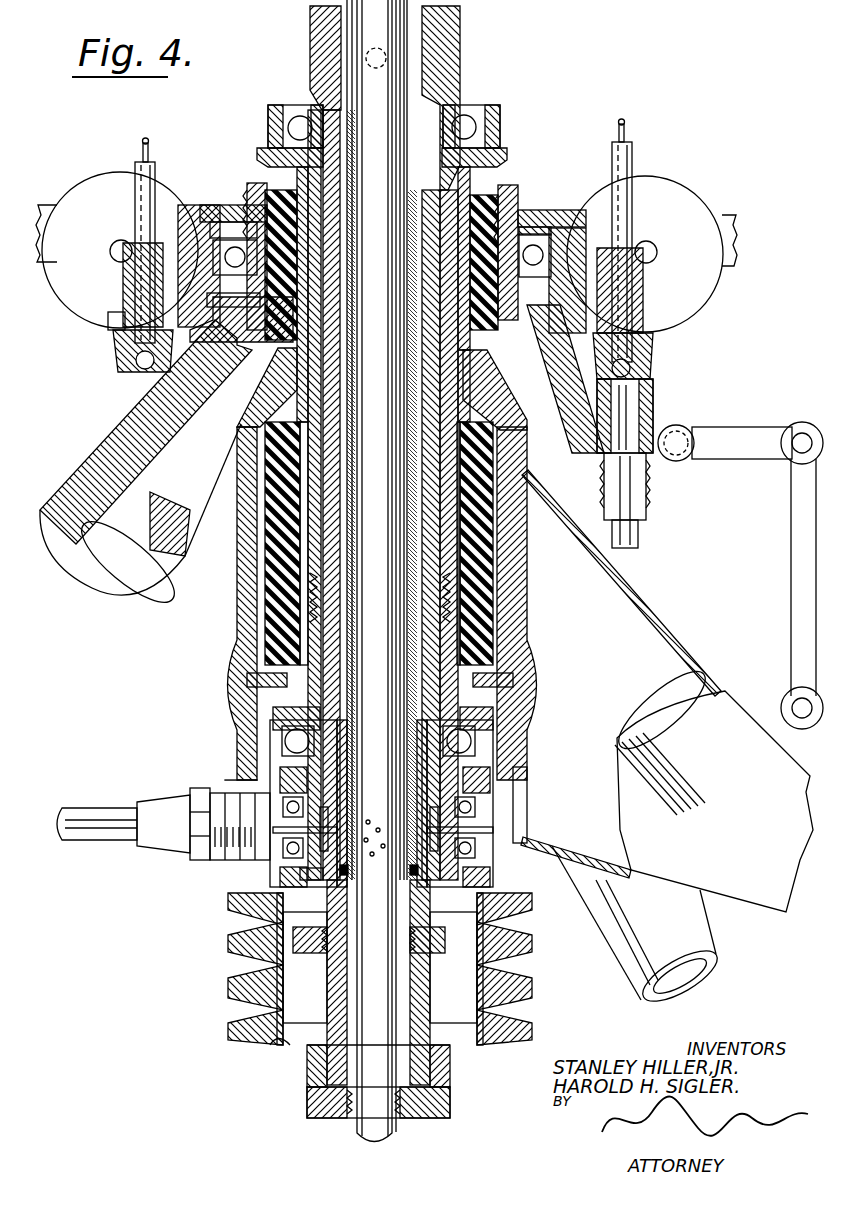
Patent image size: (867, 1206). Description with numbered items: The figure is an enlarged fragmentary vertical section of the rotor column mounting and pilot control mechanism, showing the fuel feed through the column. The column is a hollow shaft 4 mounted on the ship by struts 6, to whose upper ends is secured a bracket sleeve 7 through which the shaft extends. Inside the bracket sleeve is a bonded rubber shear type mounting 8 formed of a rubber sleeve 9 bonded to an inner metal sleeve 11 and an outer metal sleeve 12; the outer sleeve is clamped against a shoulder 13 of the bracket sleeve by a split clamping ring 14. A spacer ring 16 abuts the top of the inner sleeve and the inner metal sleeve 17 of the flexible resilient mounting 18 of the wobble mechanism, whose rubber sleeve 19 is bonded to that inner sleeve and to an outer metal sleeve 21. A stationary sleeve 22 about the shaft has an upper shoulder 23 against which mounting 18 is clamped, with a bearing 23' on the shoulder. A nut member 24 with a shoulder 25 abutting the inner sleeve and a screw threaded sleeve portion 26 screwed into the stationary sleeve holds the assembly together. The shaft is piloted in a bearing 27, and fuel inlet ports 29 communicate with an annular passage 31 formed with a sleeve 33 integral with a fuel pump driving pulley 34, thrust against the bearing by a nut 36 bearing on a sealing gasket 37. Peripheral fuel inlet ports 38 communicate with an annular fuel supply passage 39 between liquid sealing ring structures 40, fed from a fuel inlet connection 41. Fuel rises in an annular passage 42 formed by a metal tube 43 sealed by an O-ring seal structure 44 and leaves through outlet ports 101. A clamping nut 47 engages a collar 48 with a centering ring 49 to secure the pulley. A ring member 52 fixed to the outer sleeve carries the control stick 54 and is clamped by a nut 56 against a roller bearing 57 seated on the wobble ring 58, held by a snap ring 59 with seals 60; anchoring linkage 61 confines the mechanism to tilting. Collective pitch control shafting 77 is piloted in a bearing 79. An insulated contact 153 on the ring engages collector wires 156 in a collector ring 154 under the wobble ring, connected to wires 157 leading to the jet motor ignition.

The hollow shaft 4 is at (440, 58).
The struts 6 is at (752, 826).
The bracket sleeve 7 is at (237, 594).
The bonded rubber shear type mounting 8 is at (272, 608).
The sleeve of flexible resilient material 9 is at (126, 368).
The inner metal sleeve 11 is at (468, 546).
The outer metal sleeve 12 is at (510, 580).
The shoulder 13 is at (482, 410).
The split clamping ring 14 is at (515, 690).
The spacer ring 16 is at (472, 376).
The inner metal sleeve 17 is at (466, 342).
The flexible resilient mounting 18 is at (486, 196).
The rubber sleeve 19 is at (290, 260).
The outer metal sleeve 21 is at (300, 282).
The stationary sleeve 22 is at (312, 300).
The upper shoulder 23 is at (266, 140).
The bearing 23' is at (494, 134).
The nut member 24 is at (447, 638).
The shoulder 25 is at (475, 713).
The screw threaded sleeve portion 26 is at (318, 602).
The bearing 27 is at (463, 743).
The fuel inlet ports 29 is at (352, 834).
The annular passage 31 is at (428, 818).
The sleeve 33 is at (330, 878).
The fuel pump driving pulley 34 is at (228, 943).
The nut 36 is at (315, 956).
The sealing gasket 37 is at (335, 912).
The peripheral fuel inlet ports 38 is at (470, 832).
The annular fuel supply passage 39 is at (285, 834).
The liquid sealing ring structures 40 is at (300, 792).
The fuel inlet connection 41 is at (262, 792).
The annular passage 42 is at (437, 88).
The metal tube 43 is at (428, 30).
The O-ring seal structure 44 is at (348, 871).
The clamping nut 47 is at (307, 1105).
The collar 48 is at (300, 1048).
The centering ring 49 is at (270, 1044).
The ring member 52 is at (592, 448).
The overhead pilot operable control stick 54 is at (102, 532).
The nut 56 is at (520, 192).
The roller bearing 57 is at (226, 246).
The rotatable pitch control or wobble ring 58 is at (580, 270).
The snap ring 59 is at (548, 229).
The seals 60 is at (298, 335).
The anchoring linkage 61 is at (793, 552).
The collective pitch control shafting 77 is at (392, 192).
The bearing 79 is at (400, 1118).
The outlet ports 101 is at (370, 62).
The insulated contact 153 is at (640, 400).
The collector ring 154 is at (645, 356).
The collector wires 156 is at (142, 370).
The wires 157 is at (143, 152).